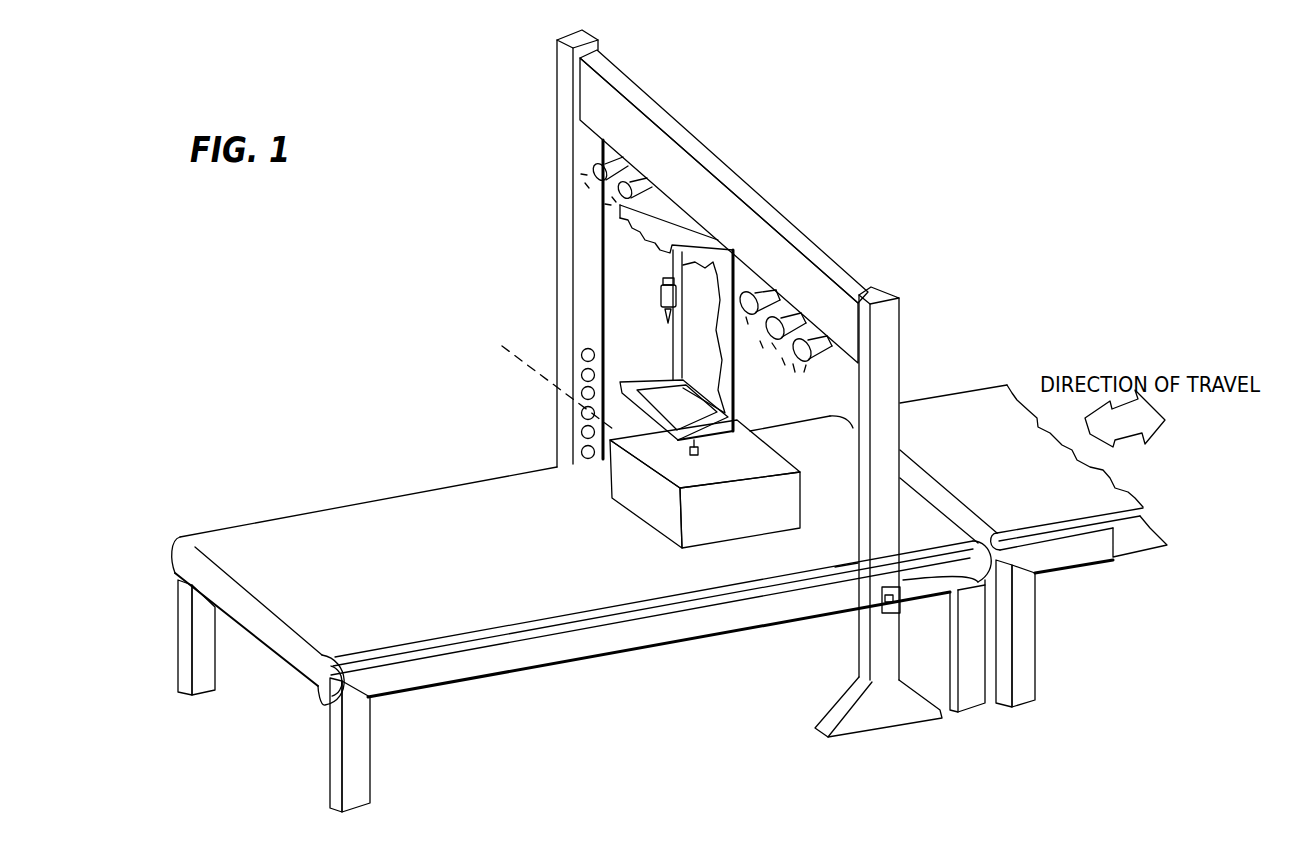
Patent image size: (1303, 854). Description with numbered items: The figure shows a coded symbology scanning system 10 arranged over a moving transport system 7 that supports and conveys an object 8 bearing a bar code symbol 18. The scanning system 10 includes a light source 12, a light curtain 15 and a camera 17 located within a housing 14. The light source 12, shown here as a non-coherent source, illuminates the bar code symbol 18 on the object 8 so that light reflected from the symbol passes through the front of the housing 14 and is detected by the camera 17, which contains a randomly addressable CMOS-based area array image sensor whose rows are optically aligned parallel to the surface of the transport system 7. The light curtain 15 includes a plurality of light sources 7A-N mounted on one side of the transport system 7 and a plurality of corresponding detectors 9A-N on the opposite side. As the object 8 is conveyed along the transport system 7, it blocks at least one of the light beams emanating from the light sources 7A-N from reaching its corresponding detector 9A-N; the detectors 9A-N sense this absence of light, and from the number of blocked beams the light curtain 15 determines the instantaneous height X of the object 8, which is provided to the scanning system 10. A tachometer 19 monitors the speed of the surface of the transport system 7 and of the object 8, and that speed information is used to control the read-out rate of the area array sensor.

The scanning system 10 is at (768, 138).
The light curtain 15 is at (577, 336).
The light sources 7A-N is at (596, 334).
The instantaneous height X is at (547, 377).
The light source 12 is at (817, 346).
The camera 17 is at (658, 306).
The housing 14 is at (667, 397).
The bar code symbol 18 is at (692, 456).
The object 8 is at (722, 533).
The transport system 7 is at (550, 606).
The detectors 9A-N is at (847, 624).
The tachometer 19 is at (891, 614).